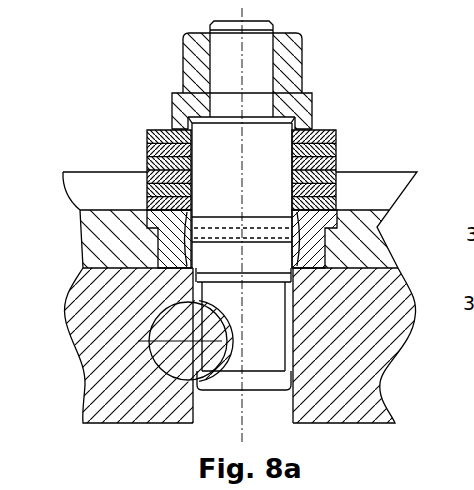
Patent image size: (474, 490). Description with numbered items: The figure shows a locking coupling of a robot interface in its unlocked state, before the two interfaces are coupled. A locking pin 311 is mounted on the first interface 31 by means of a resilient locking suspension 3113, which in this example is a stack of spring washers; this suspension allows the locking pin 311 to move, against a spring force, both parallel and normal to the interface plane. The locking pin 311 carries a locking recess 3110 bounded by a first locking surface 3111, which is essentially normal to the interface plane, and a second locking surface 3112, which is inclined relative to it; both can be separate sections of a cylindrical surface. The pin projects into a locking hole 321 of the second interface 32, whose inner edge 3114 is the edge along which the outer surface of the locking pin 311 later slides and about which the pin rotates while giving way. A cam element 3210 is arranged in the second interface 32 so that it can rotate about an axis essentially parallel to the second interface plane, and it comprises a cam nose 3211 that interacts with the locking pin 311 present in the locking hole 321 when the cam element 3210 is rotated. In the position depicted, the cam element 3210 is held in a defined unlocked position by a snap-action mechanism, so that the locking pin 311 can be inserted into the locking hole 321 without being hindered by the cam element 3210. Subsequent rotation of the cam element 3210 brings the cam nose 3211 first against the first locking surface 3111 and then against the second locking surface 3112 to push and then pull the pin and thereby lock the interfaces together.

The first interface 31 is at (80, 234).
The second interface 32 is at (83, 418).
The locking pin 311 is at (278, 135).
The locking recess 3110 is at (217, 339).
The first locking surface 3111 is at (230, 332).
The second locking surface 3112 is at (293, 369).
The locking suspension 3113 is at (337, 151).
The inner edge 3114 is at (300, 257).
The locking hole 321 is at (267, 407).
The cam element 3210 is at (177, 332).
The cam nose 3211 is at (180, 312).